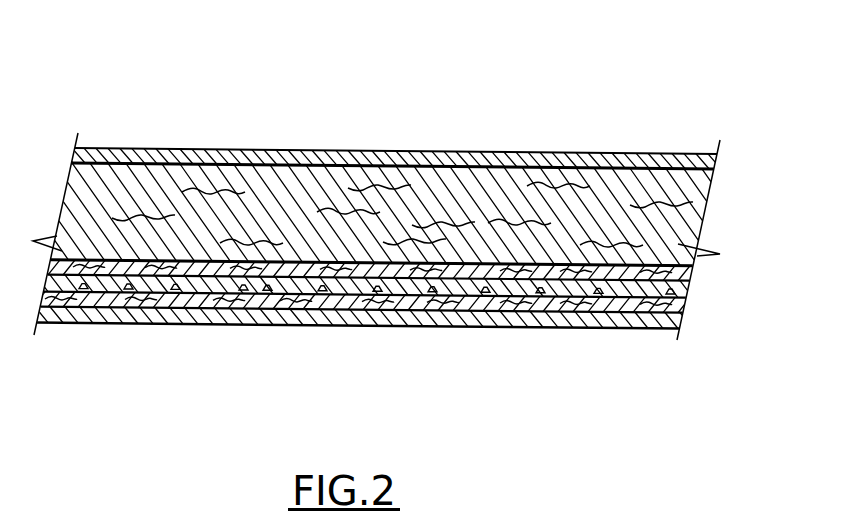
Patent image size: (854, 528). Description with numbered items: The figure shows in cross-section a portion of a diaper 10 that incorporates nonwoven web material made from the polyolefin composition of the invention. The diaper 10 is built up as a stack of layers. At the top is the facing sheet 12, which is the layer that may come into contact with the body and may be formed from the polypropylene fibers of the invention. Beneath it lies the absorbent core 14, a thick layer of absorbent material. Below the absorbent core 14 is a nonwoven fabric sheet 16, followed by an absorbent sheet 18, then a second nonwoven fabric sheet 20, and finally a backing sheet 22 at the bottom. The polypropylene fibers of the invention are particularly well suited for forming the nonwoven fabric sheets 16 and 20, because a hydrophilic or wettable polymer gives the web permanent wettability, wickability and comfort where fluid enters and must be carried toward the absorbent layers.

The diaper 10 is at (595, 117).
The facing sheet 12 is at (315, 157).
The absorbent core 14 is at (455, 205).
The nonwoven fabric sheet 16 is at (112, 268).
The absorbent sheet 18 is at (285, 288).
The second nonwoven fabric sheet 20 is at (323, 302).
The backing sheet 22 is at (463, 320).